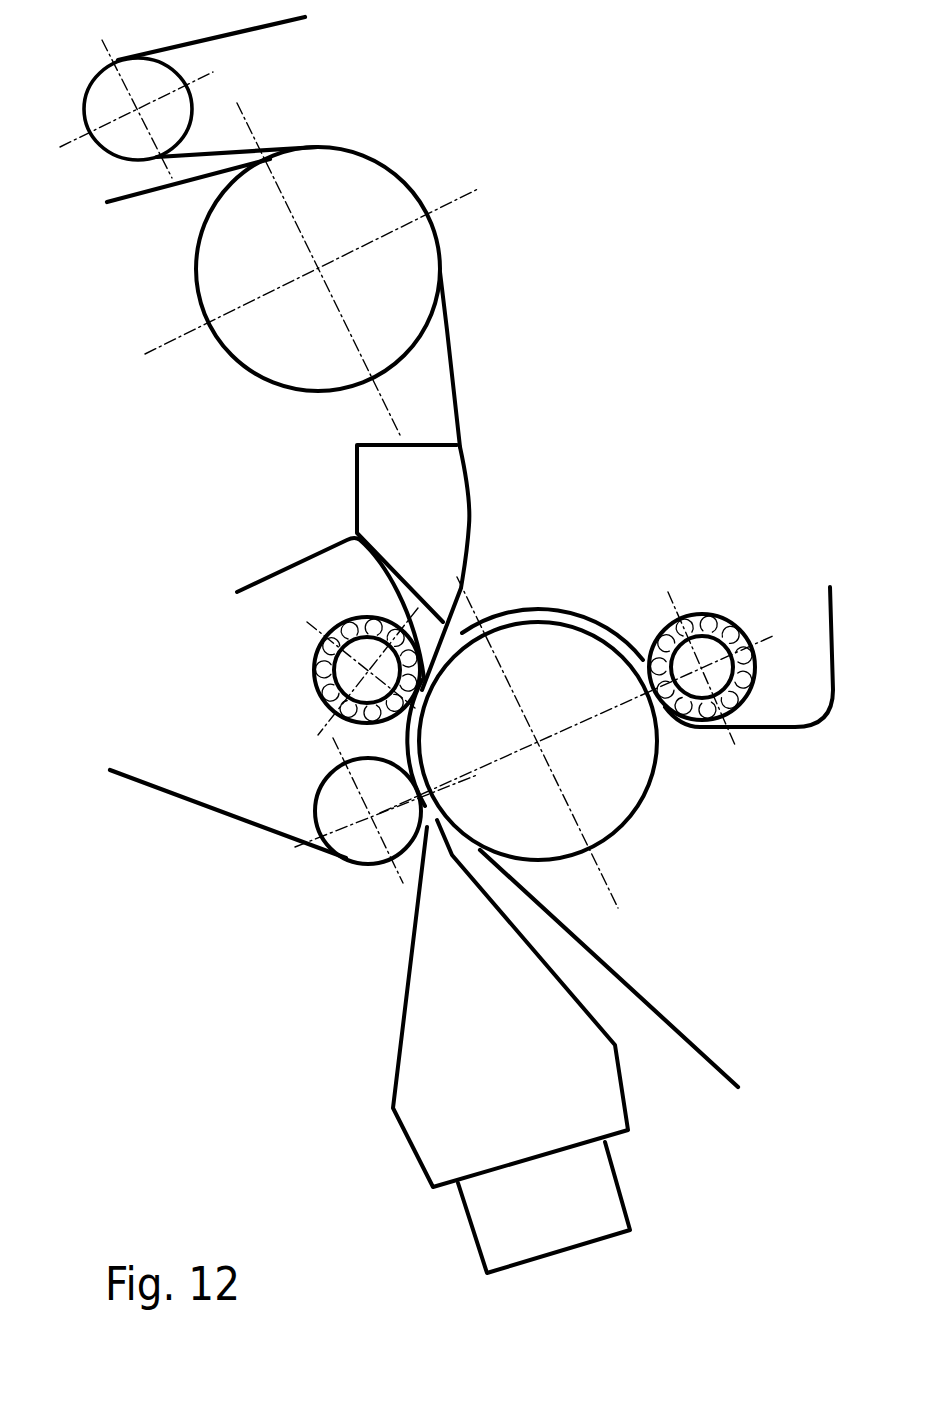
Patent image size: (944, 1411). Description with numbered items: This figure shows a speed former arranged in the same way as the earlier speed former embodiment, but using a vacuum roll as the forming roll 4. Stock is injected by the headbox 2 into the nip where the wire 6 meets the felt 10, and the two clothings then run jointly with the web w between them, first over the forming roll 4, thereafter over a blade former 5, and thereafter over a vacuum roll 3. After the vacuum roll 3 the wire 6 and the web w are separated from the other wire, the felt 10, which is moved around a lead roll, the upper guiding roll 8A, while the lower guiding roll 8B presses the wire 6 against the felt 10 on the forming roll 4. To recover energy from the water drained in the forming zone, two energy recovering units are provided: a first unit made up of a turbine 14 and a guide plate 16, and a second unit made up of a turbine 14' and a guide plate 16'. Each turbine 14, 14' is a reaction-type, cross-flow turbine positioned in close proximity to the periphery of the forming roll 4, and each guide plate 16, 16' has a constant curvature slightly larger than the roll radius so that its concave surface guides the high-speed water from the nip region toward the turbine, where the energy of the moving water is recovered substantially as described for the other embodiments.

The headbox 2 is at (350, 1075).
The vacuum roll 3 is at (398, 258).
The forming roll 4 is at (527, 648).
The blade former 5 is at (440, 518).
The wire 6 is at (153, 788).
The upper guiding roll 8A is at (165, 112).
The lower guiding roll 8B is at (358, 833).
The felt 10 is at (683, 1037).
The turbine 14 is at (293, 671).
The turbine 14' is at (601, 663).
The guide plate 16 is at (301, 743).
The guide plate 16' is at (583, 583).
The web w is at (134, 184).